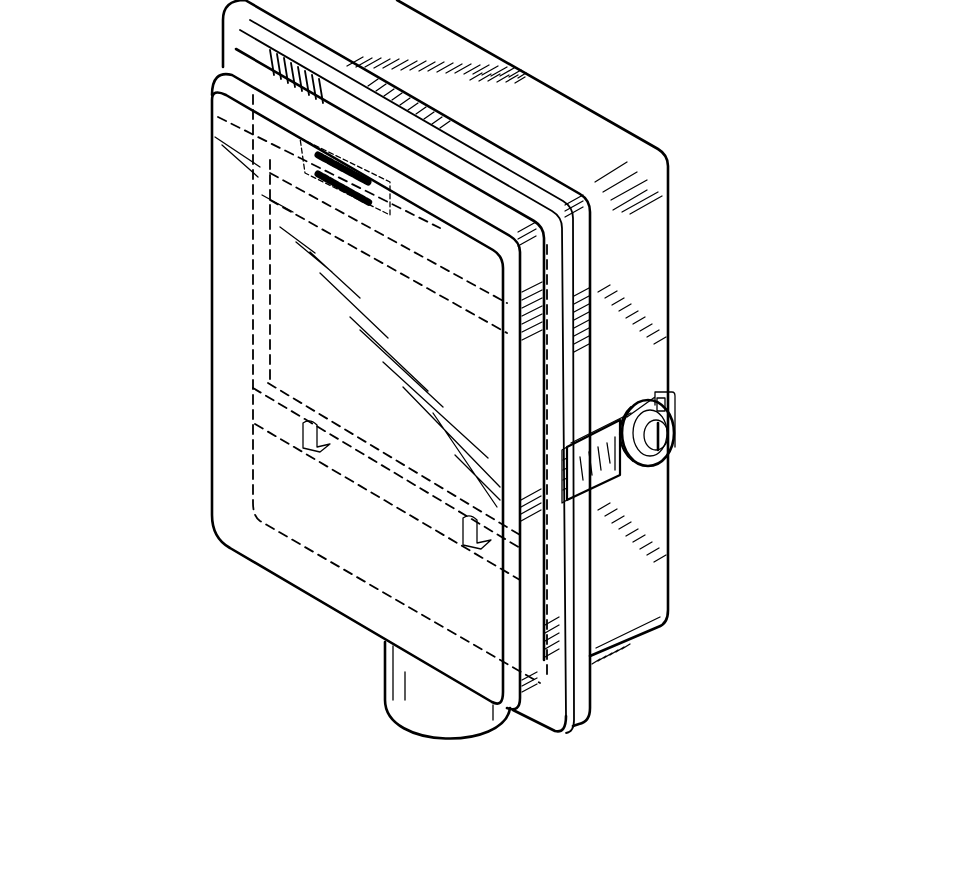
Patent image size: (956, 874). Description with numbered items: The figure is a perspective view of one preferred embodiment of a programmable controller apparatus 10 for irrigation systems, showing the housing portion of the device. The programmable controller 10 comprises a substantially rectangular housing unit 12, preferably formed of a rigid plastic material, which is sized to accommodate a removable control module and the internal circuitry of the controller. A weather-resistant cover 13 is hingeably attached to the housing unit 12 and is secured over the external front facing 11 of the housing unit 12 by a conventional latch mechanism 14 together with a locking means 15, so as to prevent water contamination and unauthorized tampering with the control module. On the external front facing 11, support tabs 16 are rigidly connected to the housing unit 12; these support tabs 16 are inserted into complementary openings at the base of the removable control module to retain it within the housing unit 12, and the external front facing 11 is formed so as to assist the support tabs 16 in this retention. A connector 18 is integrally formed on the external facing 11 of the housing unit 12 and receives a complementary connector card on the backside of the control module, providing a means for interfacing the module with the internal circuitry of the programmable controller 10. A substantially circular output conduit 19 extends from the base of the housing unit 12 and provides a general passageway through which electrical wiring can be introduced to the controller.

The programmable controller apparatus 10 is at (186, 371).
The external front facing 11 is at (353, 517).
The housing unit 12 is at (620, 270).
The weather-resistant cover 13 is at (237, 345).
The latch mechanism 14 is at (596, 470).
The locking means 15 is at (665, 446).
The support tabs 16 is at (253, 425).
The connector 18 is at (210, 117).
The output conduit 19 is at (435, 700).